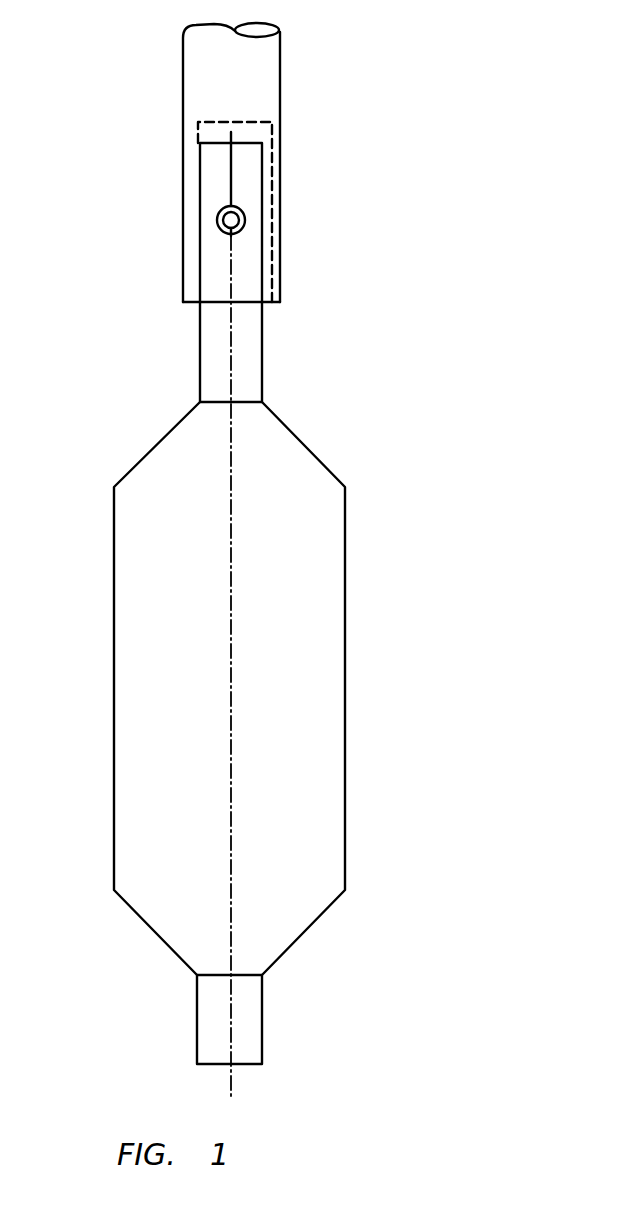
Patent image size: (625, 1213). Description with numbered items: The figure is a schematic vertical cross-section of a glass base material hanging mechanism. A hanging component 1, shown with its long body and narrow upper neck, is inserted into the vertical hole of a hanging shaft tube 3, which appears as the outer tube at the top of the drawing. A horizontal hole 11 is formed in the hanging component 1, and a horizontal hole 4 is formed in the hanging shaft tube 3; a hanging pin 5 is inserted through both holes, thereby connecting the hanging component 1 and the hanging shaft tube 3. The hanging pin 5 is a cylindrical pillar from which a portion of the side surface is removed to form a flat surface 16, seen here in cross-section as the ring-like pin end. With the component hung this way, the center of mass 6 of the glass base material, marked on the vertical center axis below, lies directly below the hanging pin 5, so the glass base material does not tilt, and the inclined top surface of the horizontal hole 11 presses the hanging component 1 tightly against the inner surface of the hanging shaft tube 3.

The hanging component 1 is at (222, 173).
The hanging shaft tube 3 is at (223, 88).
The horizontal hole 4 is at (235, 210).
The hanging pin 5 is at (245, 230).
The center of mass 6 is at (230, 688).
The horizontal hole 11 is at (230, 228).
The flat surface 16 is at (222, 213).